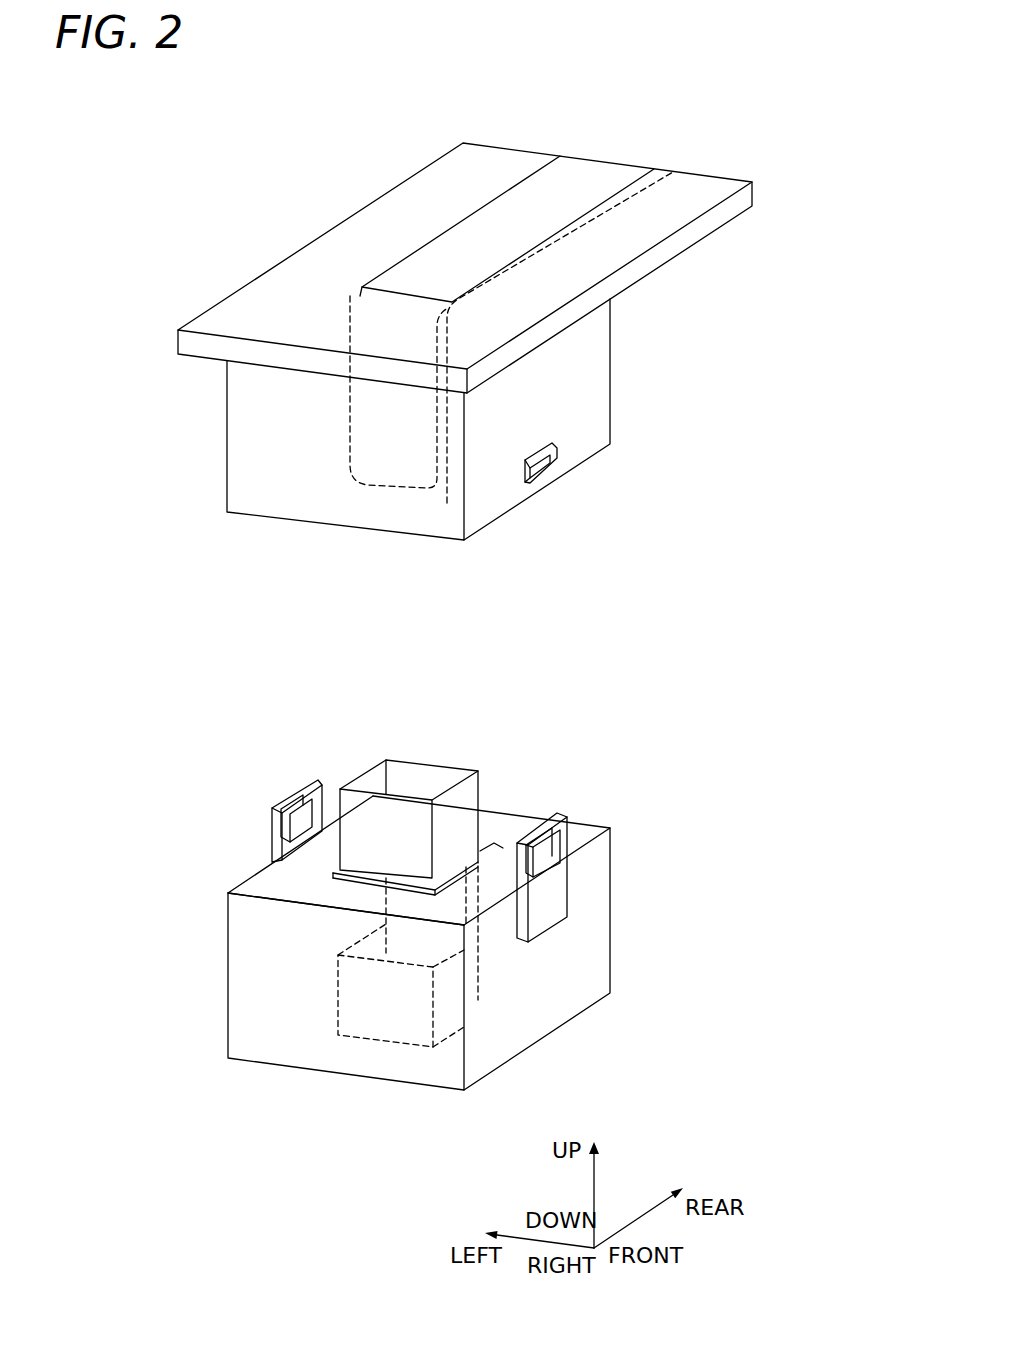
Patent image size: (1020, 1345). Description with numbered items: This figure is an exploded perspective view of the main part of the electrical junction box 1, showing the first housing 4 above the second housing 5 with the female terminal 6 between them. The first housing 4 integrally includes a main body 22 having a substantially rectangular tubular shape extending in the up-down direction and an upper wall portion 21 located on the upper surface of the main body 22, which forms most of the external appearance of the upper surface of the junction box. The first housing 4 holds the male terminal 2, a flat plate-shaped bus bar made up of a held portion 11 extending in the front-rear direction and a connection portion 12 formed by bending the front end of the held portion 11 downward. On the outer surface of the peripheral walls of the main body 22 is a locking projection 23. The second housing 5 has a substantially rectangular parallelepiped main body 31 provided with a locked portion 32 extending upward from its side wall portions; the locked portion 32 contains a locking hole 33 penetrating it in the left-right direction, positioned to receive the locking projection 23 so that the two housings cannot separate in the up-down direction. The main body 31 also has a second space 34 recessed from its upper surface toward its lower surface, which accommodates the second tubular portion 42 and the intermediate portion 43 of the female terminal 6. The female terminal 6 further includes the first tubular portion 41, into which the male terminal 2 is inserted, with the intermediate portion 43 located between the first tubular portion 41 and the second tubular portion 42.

The electrical junction box 1 is at (140, 203).
The male terminal 2 is at (455, 258).
The first housing 4 is at (226, 428).
The second housing 5 is at (226, 959).
The female terminal 6 is at (358, 767).
The held portion 11 is at (588, 178).
The connection portion 12 is at (447, 425).
The upper wall portion 21 is at (600, 247).
The main body 22 is at (432, 507).
The locking projection 23 is at (543, 460).
The main body 31 is at (275, 1010).
The locked portion 32 is at (548, 893).
The locking hole 33 is at (557, 845).
The second space 34 is at (485, 848).
The first tubular portion 41 is at (370, 826).
The second tubular portion 42 is at (453, 1000).
The intermediate portion 43 is at (443, 938).